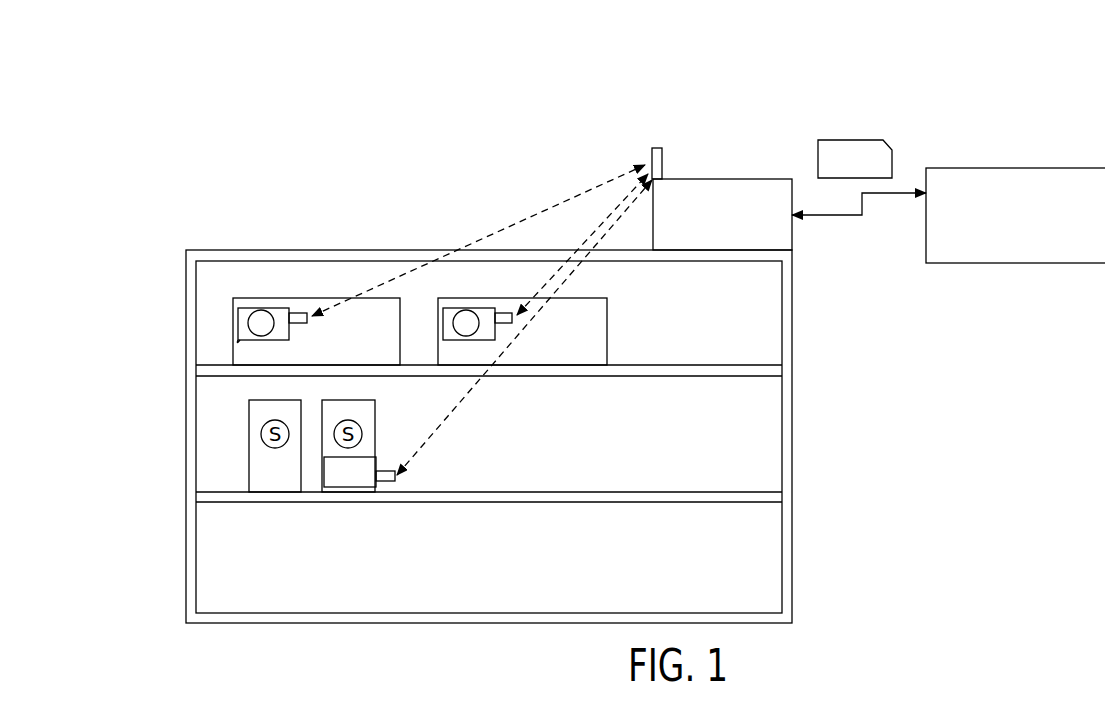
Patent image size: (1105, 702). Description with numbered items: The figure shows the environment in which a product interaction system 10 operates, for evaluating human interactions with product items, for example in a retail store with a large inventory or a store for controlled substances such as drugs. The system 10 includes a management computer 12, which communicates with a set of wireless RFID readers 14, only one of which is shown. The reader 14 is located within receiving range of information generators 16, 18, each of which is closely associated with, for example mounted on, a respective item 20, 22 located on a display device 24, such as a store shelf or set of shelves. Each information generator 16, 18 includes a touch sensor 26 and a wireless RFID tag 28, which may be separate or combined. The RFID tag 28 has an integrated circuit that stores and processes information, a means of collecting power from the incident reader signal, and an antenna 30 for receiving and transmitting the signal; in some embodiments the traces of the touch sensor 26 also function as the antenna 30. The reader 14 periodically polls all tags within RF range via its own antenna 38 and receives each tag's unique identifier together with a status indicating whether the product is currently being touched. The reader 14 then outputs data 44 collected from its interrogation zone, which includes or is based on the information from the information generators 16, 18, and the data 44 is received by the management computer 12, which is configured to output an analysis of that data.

The product interaction system 10 is at (520, 80).
The management computer 12 is at (1036, 168).
The wireless reader 14 is at (740, 178).
The information generator 16 is at (243, 323).
The information generator 18 is at (450, 307).
The item 20 is at (242, 297).
The item 22 is at (607, 330).
The display device 24 is at (258, 252).
The touch sensor 26 is at (279, 306).
The RFID tag 28 is at (238, 341).
The antenna 30 is at (298, 313).
The reader antenna 38 is at (658, 147).
The data 44 is at (868, 140).